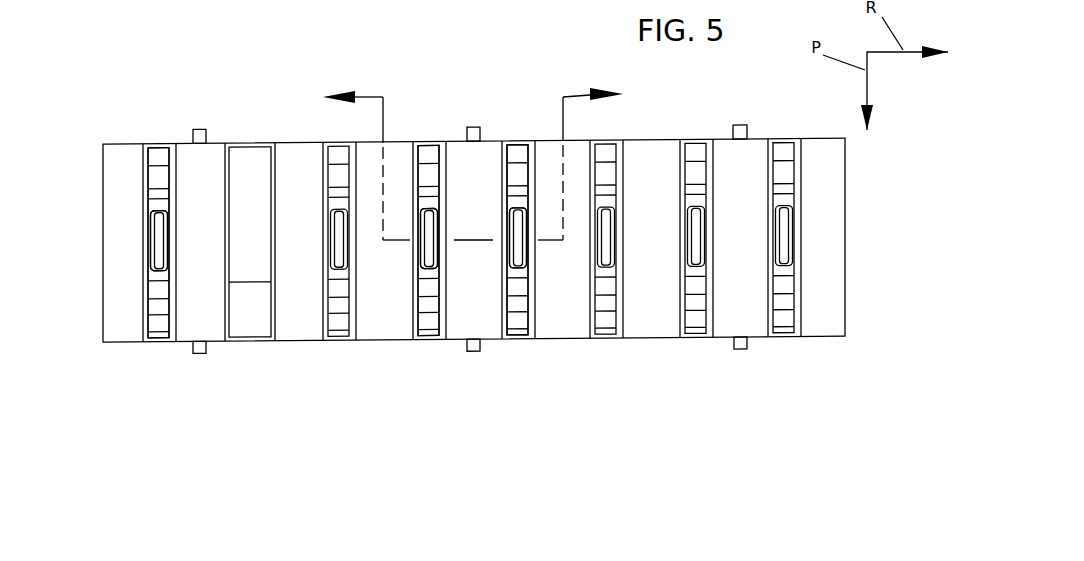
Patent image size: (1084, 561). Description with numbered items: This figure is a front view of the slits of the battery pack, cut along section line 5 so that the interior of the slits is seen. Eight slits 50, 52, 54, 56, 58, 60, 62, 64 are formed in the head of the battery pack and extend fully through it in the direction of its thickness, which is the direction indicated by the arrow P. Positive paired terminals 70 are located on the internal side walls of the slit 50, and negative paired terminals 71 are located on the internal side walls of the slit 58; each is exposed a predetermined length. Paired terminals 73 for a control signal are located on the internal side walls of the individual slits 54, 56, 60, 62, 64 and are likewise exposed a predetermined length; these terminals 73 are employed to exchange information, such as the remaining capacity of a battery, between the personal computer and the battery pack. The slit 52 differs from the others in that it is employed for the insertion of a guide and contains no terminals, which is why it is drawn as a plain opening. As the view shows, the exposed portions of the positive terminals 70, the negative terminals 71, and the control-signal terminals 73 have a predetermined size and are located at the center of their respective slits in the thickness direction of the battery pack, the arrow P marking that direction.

The section line 5- 5 is at (367, 95).
The slit 50 is at (167, 355).
The slit 52 is at (259, 355).
The slit 54 is at (345, 355).
The slit 56 is at (437, 353).
The slit 58 is at (523, 353).
The slit 60 is at (613, 353).
The slit 62 is at (703, 350).
The slit 64 is at (792, 350).
The positive paired terminals 70 is at (170, 217).
The negative paired terminals 71 is at (523, 220).
The paired terminals for a control signal 73 is at (437, 222).